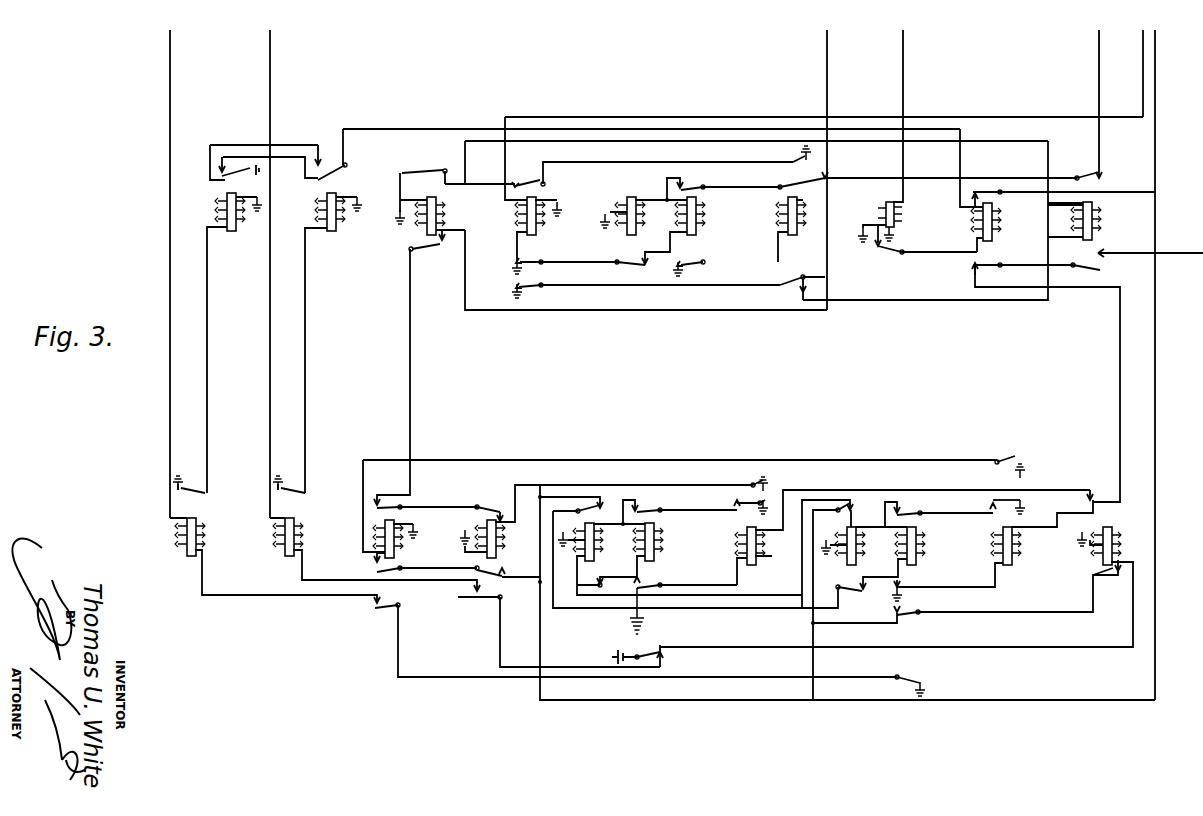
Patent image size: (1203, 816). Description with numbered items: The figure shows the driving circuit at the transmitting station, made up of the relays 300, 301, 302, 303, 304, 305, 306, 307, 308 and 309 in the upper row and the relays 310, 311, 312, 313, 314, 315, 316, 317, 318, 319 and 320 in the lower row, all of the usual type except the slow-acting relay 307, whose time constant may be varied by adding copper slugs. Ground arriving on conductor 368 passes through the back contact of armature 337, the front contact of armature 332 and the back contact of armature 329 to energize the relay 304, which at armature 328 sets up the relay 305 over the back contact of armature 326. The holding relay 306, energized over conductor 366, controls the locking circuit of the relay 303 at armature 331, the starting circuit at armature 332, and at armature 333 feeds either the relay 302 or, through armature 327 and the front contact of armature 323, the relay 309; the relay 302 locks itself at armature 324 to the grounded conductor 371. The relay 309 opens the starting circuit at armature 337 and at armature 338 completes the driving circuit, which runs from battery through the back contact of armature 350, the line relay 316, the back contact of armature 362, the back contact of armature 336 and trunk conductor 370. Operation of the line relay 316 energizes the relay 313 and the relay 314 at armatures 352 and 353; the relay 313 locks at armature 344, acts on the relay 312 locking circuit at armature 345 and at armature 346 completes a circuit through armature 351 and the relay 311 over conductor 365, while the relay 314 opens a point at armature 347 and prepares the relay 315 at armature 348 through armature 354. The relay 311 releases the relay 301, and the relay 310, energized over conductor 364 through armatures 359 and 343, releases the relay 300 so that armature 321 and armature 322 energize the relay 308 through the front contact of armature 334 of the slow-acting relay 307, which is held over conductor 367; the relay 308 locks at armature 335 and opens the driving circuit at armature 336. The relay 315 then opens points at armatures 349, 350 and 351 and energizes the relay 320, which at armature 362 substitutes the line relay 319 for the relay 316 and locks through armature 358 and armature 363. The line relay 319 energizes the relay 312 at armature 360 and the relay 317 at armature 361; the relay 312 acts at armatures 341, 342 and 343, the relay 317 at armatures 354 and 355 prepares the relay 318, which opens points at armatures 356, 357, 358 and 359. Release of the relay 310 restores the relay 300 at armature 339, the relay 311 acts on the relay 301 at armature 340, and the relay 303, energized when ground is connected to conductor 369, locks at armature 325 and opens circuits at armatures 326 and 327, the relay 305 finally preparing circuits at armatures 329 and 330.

The relay 300 is at (227, 208).
The relay 301 is at (322, 212).
The relay 302 is at (425, 232).
The relay 303 is at (525, 220).
The relay 304 is at (626, 212).
The relay 305 is at (700, 225).
The holding relay 306 is at (786, 230).
The slow-acting relay 307 is at (878, 212).
The relay 308 is at (980, 226).
The relay 309 is at (1082, 222).
The relay 310 is at (200, 540).
The relay 311 is at (306, 538).
The relay 312 is at (398, 550).
The relay 313 is at (480, 527).
The relay 314 is at (605, 543).
The relay 315 is at (657, 545).
The line relay 316 is at (765, 558).
The relay 317 is at (856, 546).
The relay 318 is at (923, 546).
The line relay 319 is at (1015, 548).
The relay 320 is at (1100, 562).
The armature 321 is at (233, 157).
The armature 322 is at (351, 164).
The armature 323 is at (424, 166).
The armature 324 is at (428, 253).
The armature 325 is at (548, 188).
The armature 326 is at (531, 252).
The armature 327 is at (543, 274).
The armature 328 is at (618, 258).
The armature 329 is at (696, 179).
The armature 330 is at (698, 252).
The armature 331 is at (792, 167).
The armature 332 is at (790, 182).
The armature 333 is at (810, 264).
The armature 334 is at (888, 257).
The armature 335 is at (1000, 170).
The armature 336 is at (1005, 250).
The armature 337 is at (1077, 172).
The armature 338 is at (1100, 270).
The armature 339 is at (208, 498).
The armature 340 is at (298, 498).
The armature 341 is at (425, 497).
The armature 342 is at (375, 573).
The armature 343 is at (378, 607).
The armature 344 is at (488, 505).
The armature 345 is at (500, 568).
The armature 346 is at (479, 601).
The armature 347 is at (587, 505).
The armature 348 is at (587, 590).
The armature 349 is at (652, 498).
The armature 350 is at (652, 583).
The armature 351 is at (648, 652).
The armature 352 is at (758, 462).
The armature 353 is at (742, 497).
The armature 354 is at (845, 500).
The armature 355 is at (845, 590).
The armature 356 is at (910, 510).
The armature 357 is at (908, 583).
The armature 358 is at (910, 608).
The armature 359 is at (908, 678).
The armature 360 is at (1020, 450).
The armature 361 is at (1003, 497).
The armature 362 is at (1108, 498).
The armature 363 is at (1100, 578).
The conductor 364 is at (170, 33).
The conductor 365 is at (270, 33).
The conductor 366 is at (827, 43).
The conductor 367 is at (903, 43).
The conductor 368 is at (1099, 43).
The conductor 369 is at (1146, 52).
The trunk conductor 370 is at (1150, 240).
The conductor 371 is at (1155, 43).